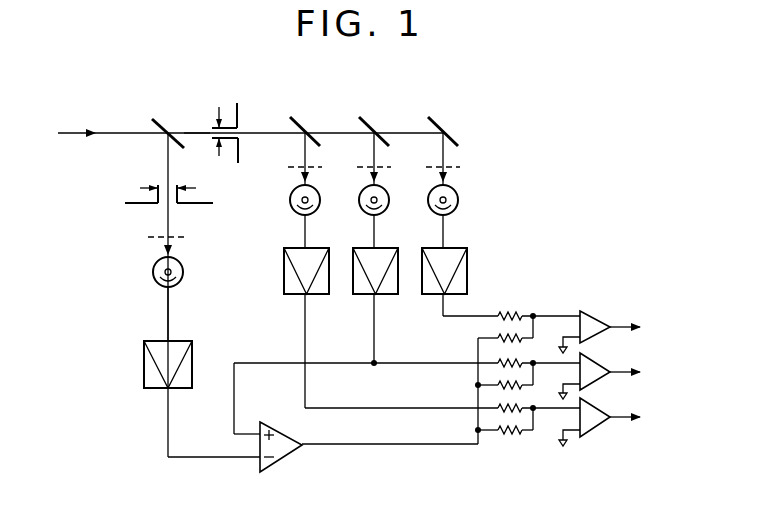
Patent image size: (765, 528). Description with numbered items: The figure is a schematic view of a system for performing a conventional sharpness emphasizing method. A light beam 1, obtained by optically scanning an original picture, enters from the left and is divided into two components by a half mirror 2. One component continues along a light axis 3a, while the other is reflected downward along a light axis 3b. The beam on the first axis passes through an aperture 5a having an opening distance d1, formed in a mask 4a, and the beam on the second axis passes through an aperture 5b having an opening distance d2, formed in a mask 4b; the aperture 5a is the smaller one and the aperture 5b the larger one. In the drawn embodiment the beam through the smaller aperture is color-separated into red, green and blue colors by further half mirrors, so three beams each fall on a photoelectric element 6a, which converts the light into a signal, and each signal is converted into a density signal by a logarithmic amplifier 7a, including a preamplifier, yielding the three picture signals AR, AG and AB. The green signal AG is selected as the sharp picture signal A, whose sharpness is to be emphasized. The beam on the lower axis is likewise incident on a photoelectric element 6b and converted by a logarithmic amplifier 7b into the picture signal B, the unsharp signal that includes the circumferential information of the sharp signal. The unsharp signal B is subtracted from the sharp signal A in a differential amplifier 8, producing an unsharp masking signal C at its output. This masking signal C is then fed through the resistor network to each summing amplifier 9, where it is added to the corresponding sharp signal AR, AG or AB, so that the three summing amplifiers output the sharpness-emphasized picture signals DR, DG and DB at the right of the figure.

The light beam 1 is at (72, 131).
The half mirror 2 is at (153, 119).
The light axis 3a is at (184, 132).
The light axis 3b is at (166, 160).
The mask 4a is at (240, 112).
The aperture 5a is at (240, 139).
The mask 4b is at (195, 208).
The aperture 5b is at (159, 204).
The opening distance d1 is at (215, 122).
The opening distance d2 is at (177, 188).
The photoelectric element 6a is at (319, 207).
The photoelectric element 6b is at (182, 279).
The logarithmic amplifier 7a is at (329, 291).
The logarithmic amplifier 7b is at (192, 354).
The differential amplifier 8 is at (285, 461).
The summing amplifier 9 is at (601, 331).
The picture signal A is at (233, 424).
The picture signal B is at (200, 458).
The unsharp masking signal C is at (375, 446).
The picture signal AB is at (306, 345).
The picture signal AG is at (375, 345).
The picture signal AR is at (446, 319).
The sharpness-emphasized picture signal DR is at (640, 328).
The sharpness-emphasized picture signal DG is at (640, 373).
The sharpness-emphasized picture signal DB is at (640, 418).